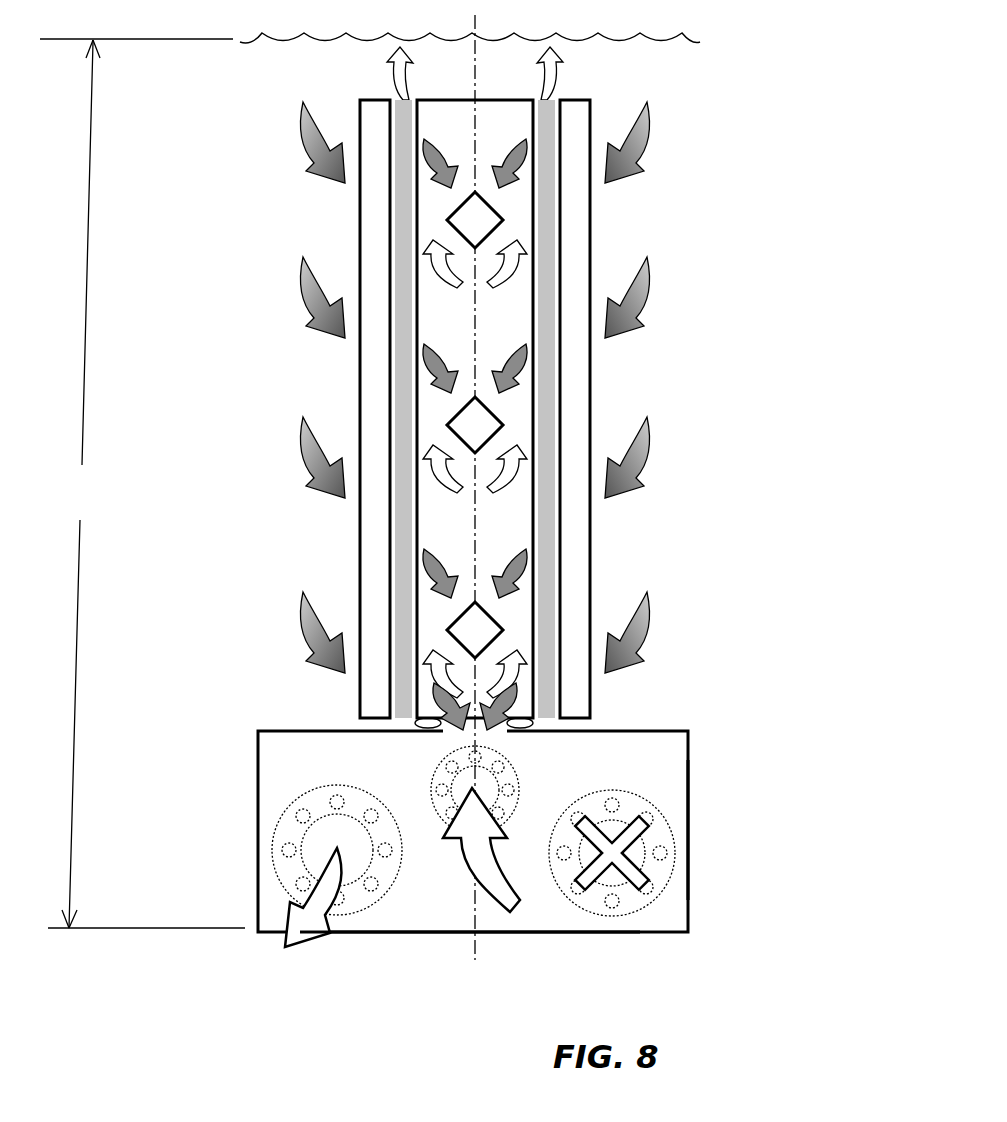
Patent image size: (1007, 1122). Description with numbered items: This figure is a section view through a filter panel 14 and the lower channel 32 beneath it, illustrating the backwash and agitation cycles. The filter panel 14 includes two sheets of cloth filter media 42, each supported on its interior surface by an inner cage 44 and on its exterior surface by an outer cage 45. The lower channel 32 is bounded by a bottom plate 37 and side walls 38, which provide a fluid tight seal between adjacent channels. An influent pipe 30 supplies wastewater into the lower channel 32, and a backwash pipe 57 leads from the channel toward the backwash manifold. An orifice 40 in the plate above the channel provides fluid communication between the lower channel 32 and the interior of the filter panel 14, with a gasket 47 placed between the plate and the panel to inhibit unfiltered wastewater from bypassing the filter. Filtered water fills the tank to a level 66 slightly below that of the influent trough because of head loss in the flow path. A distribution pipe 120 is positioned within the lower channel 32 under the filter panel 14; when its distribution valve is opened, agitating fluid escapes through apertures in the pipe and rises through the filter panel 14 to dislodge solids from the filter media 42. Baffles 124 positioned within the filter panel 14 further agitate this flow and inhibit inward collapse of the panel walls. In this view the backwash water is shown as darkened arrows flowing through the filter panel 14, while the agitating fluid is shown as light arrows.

The filter panel 14 is at (707, 95).
The baffle 124 is at (483, 222).
The filter media 42 is at (405, 237).
The outer cage 45 is at (378, 398).
The inner cage 44 is at (435, 517).
The gasket 47 is at (522, 733).
The orifice 40 is at (458, 733).
The lower channel 32 is at (665, 752).
The influent pipe 30 is at (317, 843).
The backwash pipe 57 is at (632, 853).
The side wall 38 is at (693, 905).
The bottom plate 37 is at (635, 935).
The distribution pipe 120 is at (462, 790).
The level 66 is at (142, 483).